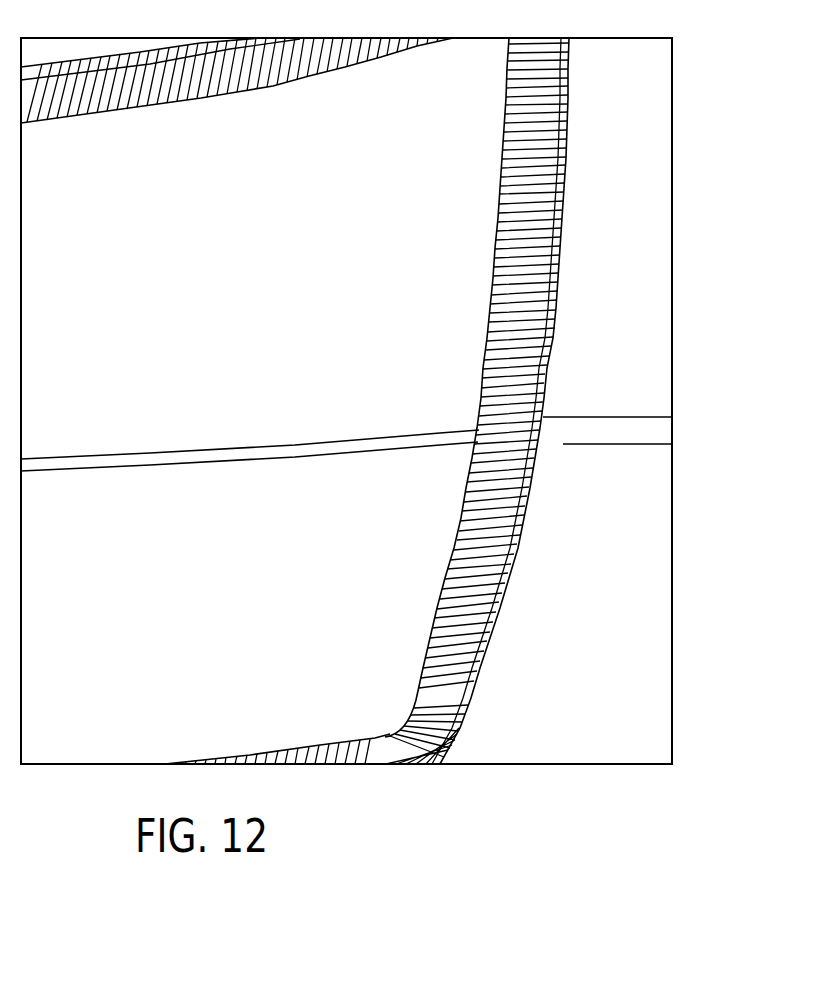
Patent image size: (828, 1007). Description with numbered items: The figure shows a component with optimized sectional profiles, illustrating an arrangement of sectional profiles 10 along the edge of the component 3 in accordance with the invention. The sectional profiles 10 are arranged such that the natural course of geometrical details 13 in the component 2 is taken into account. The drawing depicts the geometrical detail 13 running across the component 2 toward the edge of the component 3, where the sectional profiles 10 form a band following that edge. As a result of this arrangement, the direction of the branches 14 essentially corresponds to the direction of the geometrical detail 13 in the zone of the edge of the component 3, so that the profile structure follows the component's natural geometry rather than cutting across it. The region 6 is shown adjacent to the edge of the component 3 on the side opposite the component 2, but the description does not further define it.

The component 2 is at (262, 316).
The edge of the component 3 is at (496, 220).
The second sheet metal part 6 is at (622, 315).
The sectional profiles 10 is at (508, 633).
The geometrical detail 13 is at (258, 461).
The branches 14 is at (545, 437).